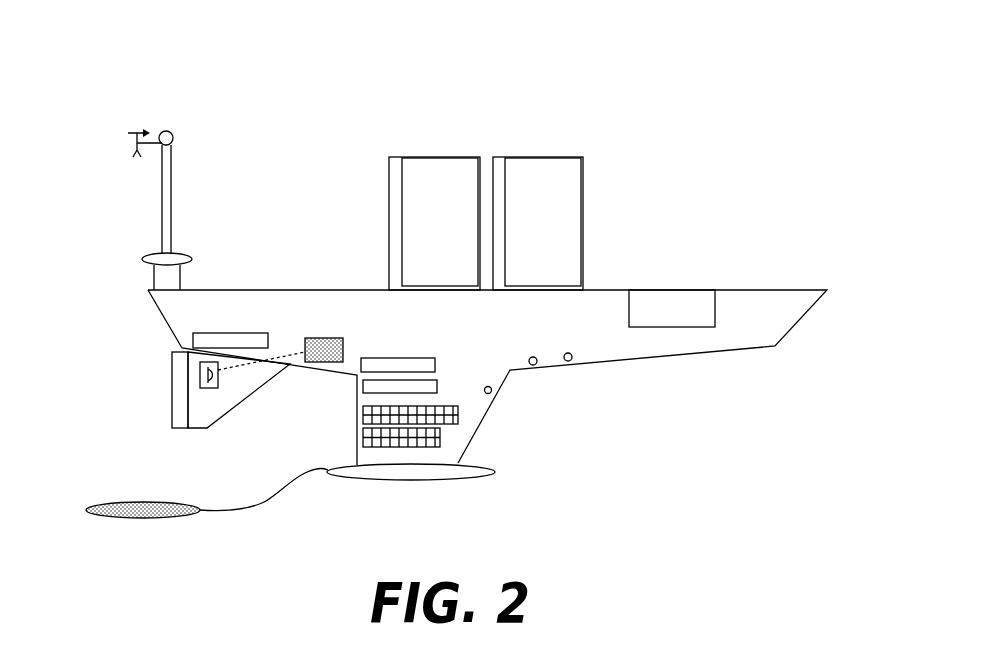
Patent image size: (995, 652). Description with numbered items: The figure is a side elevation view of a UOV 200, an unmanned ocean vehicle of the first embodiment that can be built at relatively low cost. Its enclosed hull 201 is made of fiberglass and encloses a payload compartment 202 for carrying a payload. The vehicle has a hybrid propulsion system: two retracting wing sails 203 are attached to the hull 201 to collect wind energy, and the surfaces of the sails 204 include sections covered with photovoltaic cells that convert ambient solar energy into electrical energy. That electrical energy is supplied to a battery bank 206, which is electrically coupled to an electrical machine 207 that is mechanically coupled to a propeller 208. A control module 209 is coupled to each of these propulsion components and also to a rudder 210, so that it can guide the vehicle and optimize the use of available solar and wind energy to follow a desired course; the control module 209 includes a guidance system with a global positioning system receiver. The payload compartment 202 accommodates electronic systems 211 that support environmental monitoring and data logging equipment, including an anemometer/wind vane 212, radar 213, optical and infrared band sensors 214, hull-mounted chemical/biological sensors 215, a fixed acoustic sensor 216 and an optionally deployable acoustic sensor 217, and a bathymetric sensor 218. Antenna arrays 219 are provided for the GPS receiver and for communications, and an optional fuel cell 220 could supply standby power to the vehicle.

The UOV 200 is at (597, 66).
The enclosed hull 201 is at (738, 337).
The payload compartment 202 is at (694, 320).
The retracting wing sails 203 is at (486, 189).
The sails 204 is at (462, 236).
The battery bank 206 is at (450, 415).
The electrical machine 207 is at (325, 338).
The propeller 208 is at (215, 377).
The control module 209 is at (207, 340).
The rudder 210 is at (178, 378).
The electronic systems 211 is at (408, 365).
The anemometer/wind vane 212 is at (125, 143).
The radar 213 is at (180, 277).
The optical and infrared band sensors 214 is at (150, 257).
The hull-mounted chemical/biological sensors 215 is at (538, 367).
The fixed acoustic sensor 216 is at (418, 473).
The deployable acoustic sensor 217 is at (142, 512).
The bathymetric sensor 218 is at (492, 391).
The antenna arrays 219 is at (171, 188).
The fuel cell 220 is at (432, 437).